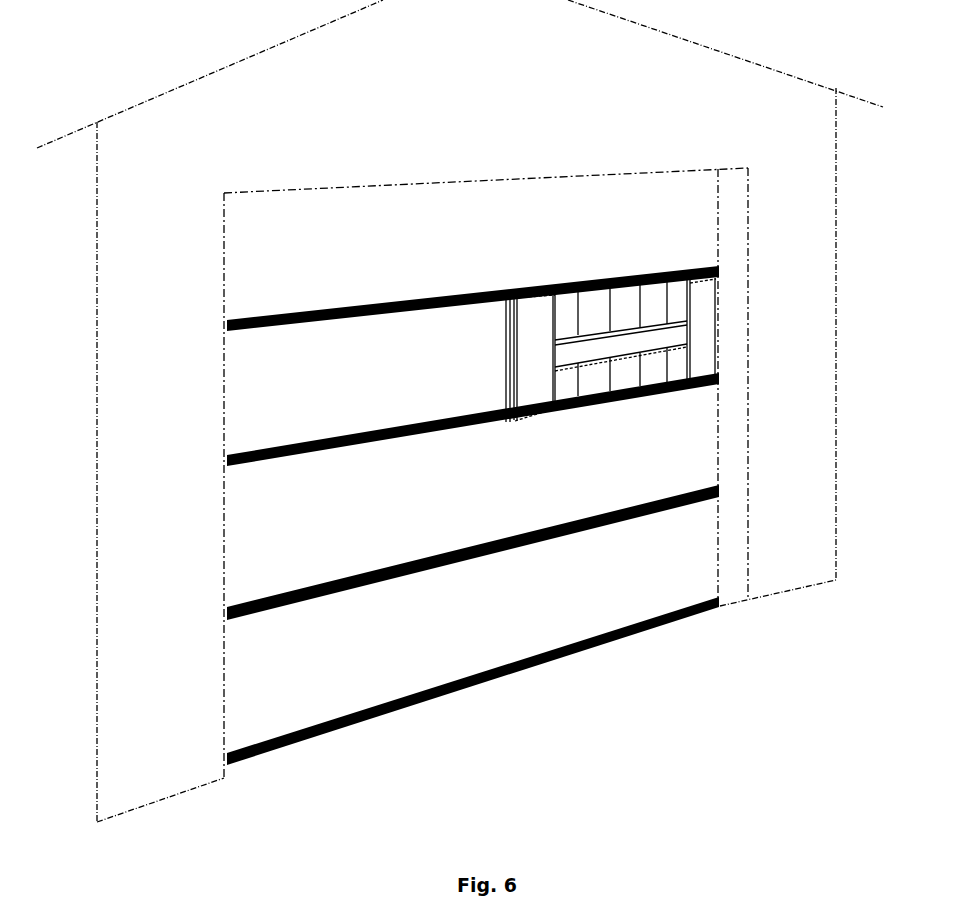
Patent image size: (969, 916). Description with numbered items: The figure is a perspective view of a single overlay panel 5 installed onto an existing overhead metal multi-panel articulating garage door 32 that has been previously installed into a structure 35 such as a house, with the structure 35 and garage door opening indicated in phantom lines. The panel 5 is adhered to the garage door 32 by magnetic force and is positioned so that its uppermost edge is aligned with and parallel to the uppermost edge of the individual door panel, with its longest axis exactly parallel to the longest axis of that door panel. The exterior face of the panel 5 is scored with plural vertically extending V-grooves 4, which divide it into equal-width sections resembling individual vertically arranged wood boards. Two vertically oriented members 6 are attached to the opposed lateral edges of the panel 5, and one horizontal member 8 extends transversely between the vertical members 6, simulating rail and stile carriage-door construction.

The V-grooves 4 is at (575, 297).
The panel 5 is at (612, 262).
The vertical members 6 is at (698, 357).
The horizontal member 8 is at (630, 343).
The garage door 32 is at (265, 547).
The structure 35 is at (187, 215).